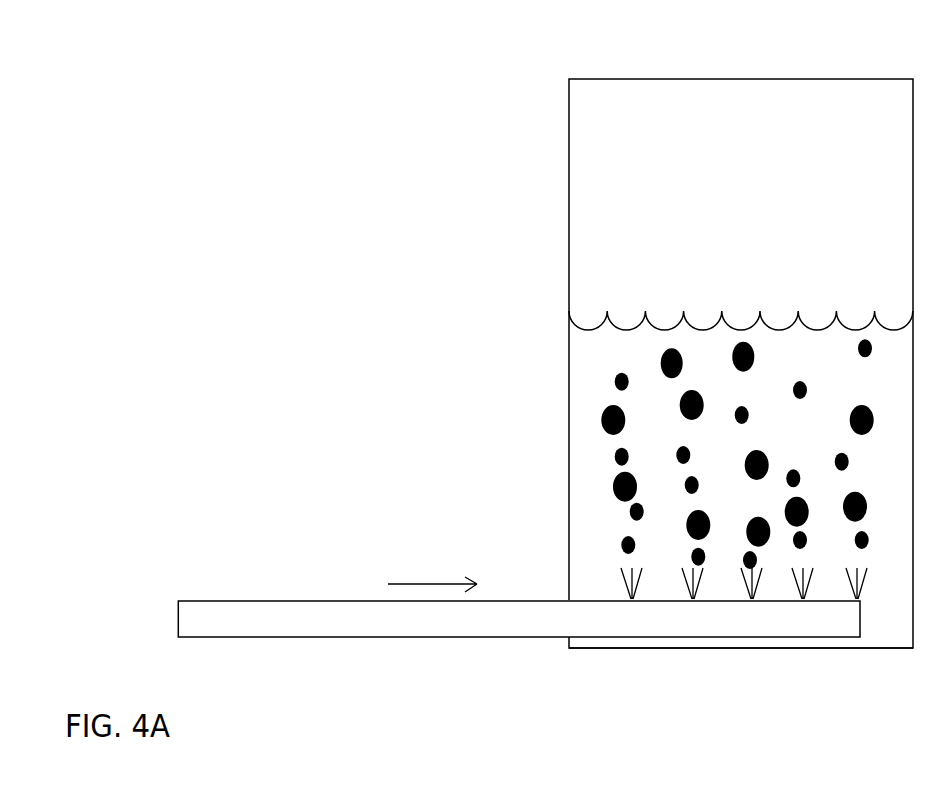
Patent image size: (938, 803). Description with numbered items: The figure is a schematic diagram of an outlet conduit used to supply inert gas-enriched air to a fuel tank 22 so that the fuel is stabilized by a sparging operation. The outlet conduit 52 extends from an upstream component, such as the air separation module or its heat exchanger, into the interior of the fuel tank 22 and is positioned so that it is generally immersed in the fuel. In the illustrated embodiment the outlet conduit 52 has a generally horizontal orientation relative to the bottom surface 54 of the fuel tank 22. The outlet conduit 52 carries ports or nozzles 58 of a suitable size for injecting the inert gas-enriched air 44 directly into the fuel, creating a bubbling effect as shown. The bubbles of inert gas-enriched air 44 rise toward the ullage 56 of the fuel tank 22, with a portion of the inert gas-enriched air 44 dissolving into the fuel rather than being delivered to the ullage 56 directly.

The fuel tank 22 is at (503, 82).
The inert gas-enriched air 44 is at (432, 570).
The outlet conduit 52 is at (357, 615).
The bottom surface 54 is at (728, 650).
The ullage 56 is at (741, 370).
The ports or nozzles 58 is at (690, 600).